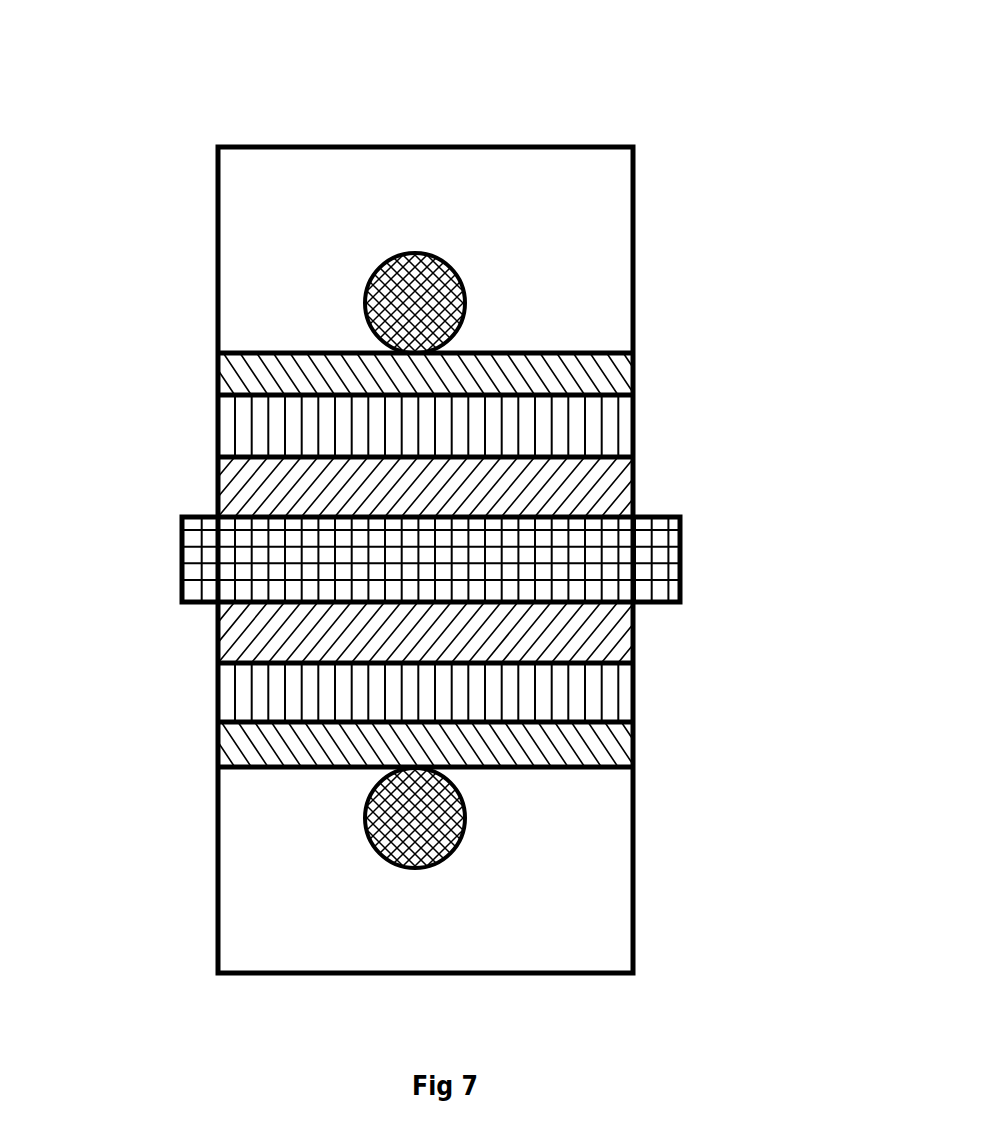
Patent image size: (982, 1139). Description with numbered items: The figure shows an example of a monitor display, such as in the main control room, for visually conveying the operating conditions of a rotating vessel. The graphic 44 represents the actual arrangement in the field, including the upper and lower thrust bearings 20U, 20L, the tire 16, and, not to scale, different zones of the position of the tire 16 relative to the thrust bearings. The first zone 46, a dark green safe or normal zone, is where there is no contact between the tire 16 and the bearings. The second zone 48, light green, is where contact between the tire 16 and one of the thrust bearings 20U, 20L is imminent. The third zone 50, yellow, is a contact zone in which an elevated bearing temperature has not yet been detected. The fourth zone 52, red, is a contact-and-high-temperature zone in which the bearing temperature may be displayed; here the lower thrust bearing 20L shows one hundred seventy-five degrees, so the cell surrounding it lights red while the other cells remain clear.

The graphic 44 is at (272, 94).
The fourth zone 52 is at (622, 213).
The third zone 50 is at (622, 372).
The second zone 48 is at (240, 418).
The first zone 46 is at (613, 482).
The tire 16 is at (180, 560).
The upper thrust bearing 20U is at (373, 267).
The lower thrust bearing 20L is at (365, 822).